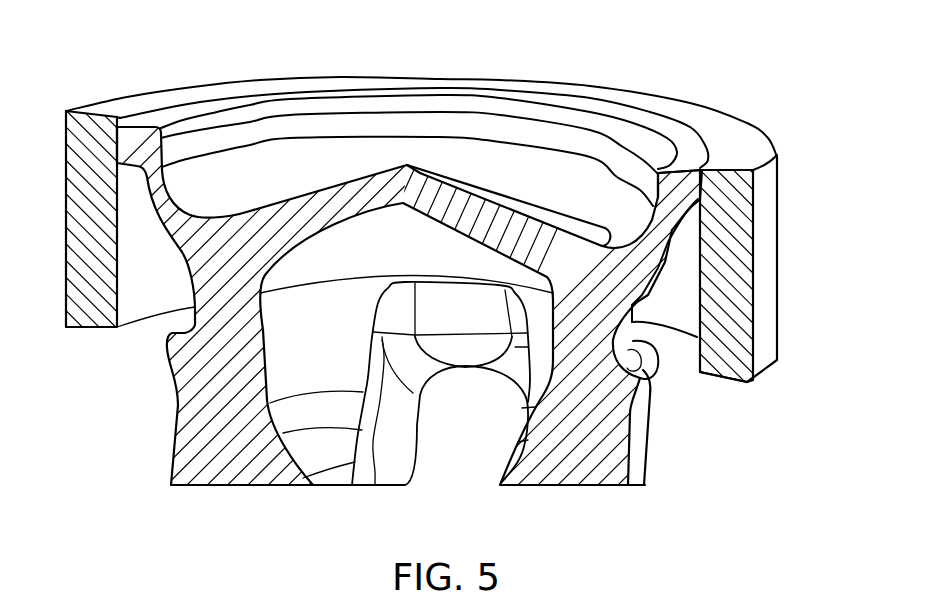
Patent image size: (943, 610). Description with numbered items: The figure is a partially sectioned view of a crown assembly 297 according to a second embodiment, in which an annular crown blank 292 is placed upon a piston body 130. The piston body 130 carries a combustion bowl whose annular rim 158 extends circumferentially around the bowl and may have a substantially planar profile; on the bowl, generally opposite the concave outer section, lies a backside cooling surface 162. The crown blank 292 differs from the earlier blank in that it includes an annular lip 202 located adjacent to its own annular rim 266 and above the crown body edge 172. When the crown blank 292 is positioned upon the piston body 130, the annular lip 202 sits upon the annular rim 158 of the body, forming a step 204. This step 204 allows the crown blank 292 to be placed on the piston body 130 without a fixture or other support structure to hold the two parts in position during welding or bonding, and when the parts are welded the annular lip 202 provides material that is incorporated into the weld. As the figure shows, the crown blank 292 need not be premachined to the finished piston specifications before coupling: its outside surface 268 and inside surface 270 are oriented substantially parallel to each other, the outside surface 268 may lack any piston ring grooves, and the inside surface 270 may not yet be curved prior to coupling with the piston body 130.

The crown assembly 297 is at (257, 54).
The step 204 is at (124, 125).
The annular rim 158 is at (651, 122).
The annular lip 202 is at (710, 157).
The annular rim 266 is at (744, 126).
The crown body edge 172 is at (705, 192).
The crown blank 292 is at (778, 195).
The outside surface 268 is at (758, 285).
The inside surface 270 is at (699, 362).
The backside cooling surface 162 is at (673, 250).
The piston body 130 is at (647, 452).